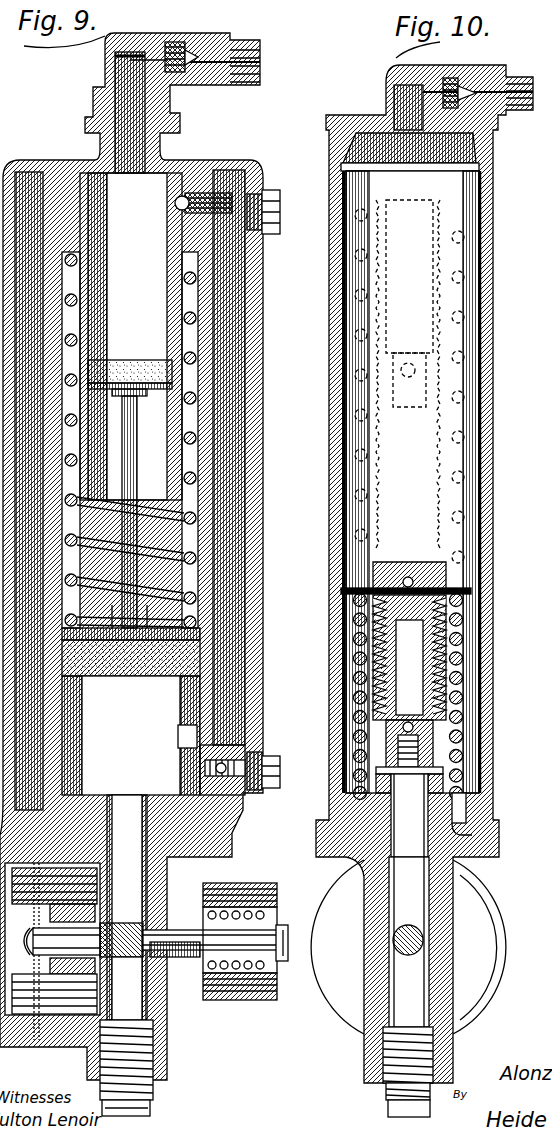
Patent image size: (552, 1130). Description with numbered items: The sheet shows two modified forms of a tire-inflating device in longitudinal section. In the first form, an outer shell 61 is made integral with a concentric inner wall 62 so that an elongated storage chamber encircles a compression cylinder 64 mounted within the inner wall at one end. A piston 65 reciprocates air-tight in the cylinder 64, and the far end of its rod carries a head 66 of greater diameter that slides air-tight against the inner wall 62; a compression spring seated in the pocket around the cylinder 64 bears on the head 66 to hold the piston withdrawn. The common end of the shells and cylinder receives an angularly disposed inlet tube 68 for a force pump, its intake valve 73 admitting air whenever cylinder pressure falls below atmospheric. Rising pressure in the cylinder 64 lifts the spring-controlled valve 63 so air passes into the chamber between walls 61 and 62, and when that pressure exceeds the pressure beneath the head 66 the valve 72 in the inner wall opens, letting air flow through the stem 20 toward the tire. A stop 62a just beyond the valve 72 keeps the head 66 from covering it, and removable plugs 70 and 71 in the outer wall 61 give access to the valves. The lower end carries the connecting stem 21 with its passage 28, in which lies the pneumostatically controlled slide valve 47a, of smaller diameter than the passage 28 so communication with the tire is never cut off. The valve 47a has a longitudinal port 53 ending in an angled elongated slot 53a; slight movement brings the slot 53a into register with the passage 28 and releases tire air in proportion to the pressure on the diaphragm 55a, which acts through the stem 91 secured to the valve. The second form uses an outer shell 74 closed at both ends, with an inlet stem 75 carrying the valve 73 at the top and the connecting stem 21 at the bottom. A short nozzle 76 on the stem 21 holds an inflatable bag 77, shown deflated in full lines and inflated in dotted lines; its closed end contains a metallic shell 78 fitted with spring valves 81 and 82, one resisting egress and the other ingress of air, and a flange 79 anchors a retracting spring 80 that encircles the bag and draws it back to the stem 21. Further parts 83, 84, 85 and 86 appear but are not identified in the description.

In FIG. 9, the stem 20 is at (150, 1098).
In FIG. 10, the stem 20 is at (386, 1111).
In FIG. 10, the connecting stem 21 is at (368, 1062).
In FIG. 9, the passage 28 is at (163, 1004).
In FIG. 10, the passage 28 is at (416, 907).
In FIG. 9, the slide valve 47a is at (118, 926).
In FIG. 10, the slide valve 47a is at (422, 932).
In FIG. 9, the longitudinally disposed port 53 is at (287, 947).
In FIG. 9, the elongated slot 53a is at (183, 955).
In FIG. 10, the elongated slot 53a is at (450, 963).
In FIG. 9, the diaphragm 55a is at (42, 1008).
In FIG. 9, the outer shell 61 is at (202, 655).
In FIG. 9, the inner wall 62 is at (205, 571).
In FIG. 9, the stop 62a is at (194, 727).
In FIG. 9, the spring-controlled valve 63 is at (190, 194).
In FIG. 9, the compression cylinder 64 is at (174, 188).
In FIG. 9, the piston 65 is at (172, 383).
In FIG. 9, the piston head 66 is at (200, 634).
In FIG. 9, the inlet tube 68 is at (98, 99).
In FIG. 9, the removable plug 70 is at (268, 222).
In FIG. 9, the removable plug 71 is at (260, 765).
In FIG. 9, the valve 72 is at (250, 742).
In FIG. 9, the valve 73 is at (188, 47).
In FIG. 10, the outer shell 74 is at (336, 305).
In FIG. 10, the inlet stem 75 is at (391, 88).
In FIG. 10, the nozzle 76 is at (470, 806).
In FIG. 10, the inflatable bag 77 is at (464, 736).
In FIG. 10, the metallic shell 78 is at (436, 690).
In FIG. 10, the flange 79 is at (420, 581).
In FIG. 10, the retracting spring 80 is at (464, 657).
In FIG. 10, the spring valve 81 is at (458, 582).
In FIG. 10, the spring valve 82 is at (446, 767).
In FIG. 10, the member 83 is at (545, 445).
In FIG. 10, the member 84 is at (543, 412).
In FIG. 10, the member 85 is at (545, 500).
In FIG. 10, the member 86 is at (541, 378).
In FIG. 9, the stem 91 is at (40, 972).